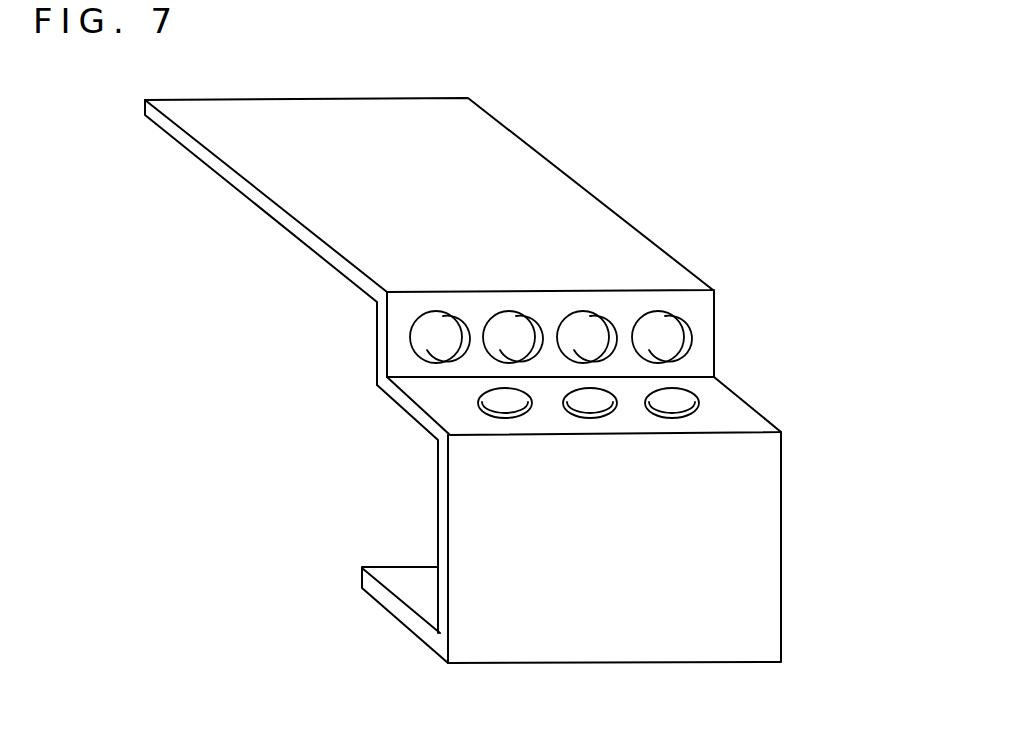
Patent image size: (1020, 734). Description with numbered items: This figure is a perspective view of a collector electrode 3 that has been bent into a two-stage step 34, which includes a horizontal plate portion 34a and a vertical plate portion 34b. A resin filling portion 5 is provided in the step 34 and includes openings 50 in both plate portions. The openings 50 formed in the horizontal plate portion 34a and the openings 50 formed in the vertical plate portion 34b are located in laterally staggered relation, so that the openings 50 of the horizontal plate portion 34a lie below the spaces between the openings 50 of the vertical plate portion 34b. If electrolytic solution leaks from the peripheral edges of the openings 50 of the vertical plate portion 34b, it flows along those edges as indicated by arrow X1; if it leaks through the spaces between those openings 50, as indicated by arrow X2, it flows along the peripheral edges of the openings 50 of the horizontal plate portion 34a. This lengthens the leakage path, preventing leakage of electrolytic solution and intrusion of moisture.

The collector electrode 3 is at (513, 177).
The two-stage step 34 is at (553, 474).
The horizontal plate portion 34a is at (730, 403).
The vertical plate portion 34b is at (398, 303).
The openings 50 is at (585, 349).
The resin filling portion 5 is at (587, 337).
The arrow X1 is at (472, 428).
The arrow X2 is at (527, 316).